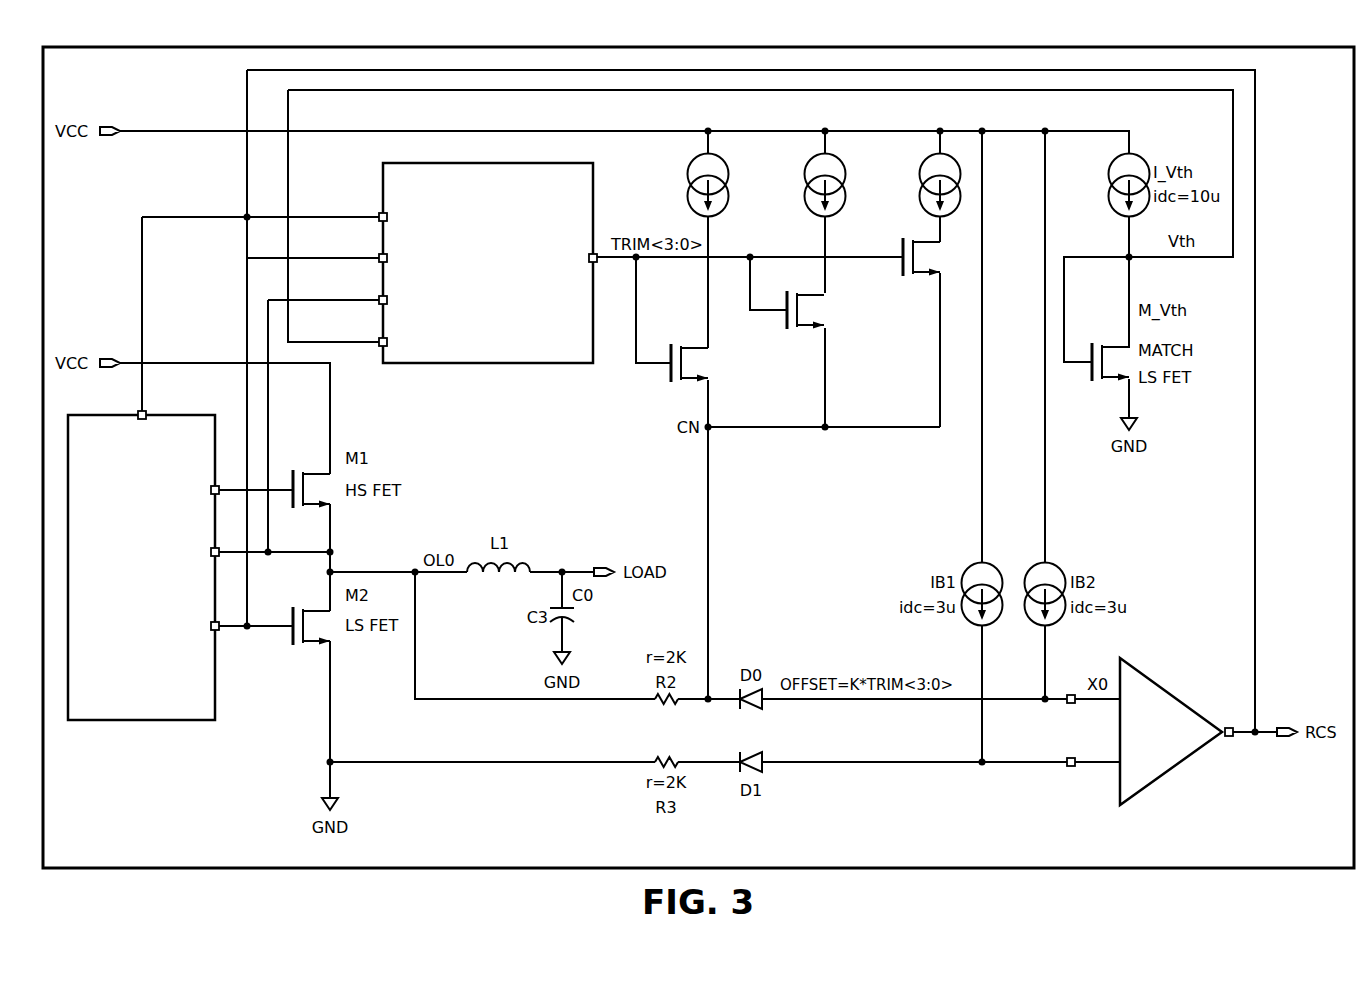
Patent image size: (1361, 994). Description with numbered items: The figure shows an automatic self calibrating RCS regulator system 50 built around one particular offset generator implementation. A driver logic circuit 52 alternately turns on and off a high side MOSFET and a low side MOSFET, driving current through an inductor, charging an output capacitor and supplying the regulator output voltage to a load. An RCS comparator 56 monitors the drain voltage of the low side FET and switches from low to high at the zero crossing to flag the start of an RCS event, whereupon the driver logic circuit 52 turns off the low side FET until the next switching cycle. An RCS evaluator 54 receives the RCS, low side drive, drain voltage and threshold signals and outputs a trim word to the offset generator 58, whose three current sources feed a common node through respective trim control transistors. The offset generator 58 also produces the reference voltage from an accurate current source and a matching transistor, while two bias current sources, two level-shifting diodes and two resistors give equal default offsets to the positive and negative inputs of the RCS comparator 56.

The automatic self calibrating RCS regulator system 50 is at (1028, 876).
The driver logic circuit 52 is at (143, 722).
The RCS evaluator 54 is at (378, 184).
The RCS comparator 56 is at (1172, 771).
The offset generator 58 is at (642, 399).